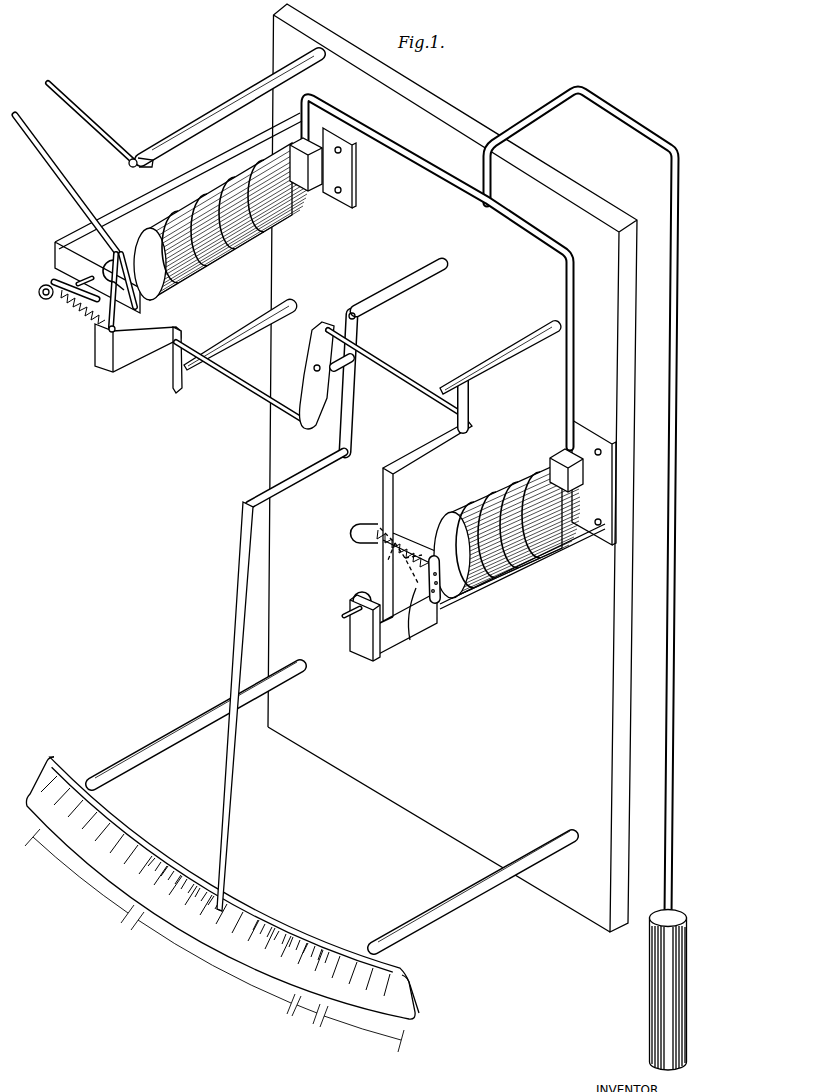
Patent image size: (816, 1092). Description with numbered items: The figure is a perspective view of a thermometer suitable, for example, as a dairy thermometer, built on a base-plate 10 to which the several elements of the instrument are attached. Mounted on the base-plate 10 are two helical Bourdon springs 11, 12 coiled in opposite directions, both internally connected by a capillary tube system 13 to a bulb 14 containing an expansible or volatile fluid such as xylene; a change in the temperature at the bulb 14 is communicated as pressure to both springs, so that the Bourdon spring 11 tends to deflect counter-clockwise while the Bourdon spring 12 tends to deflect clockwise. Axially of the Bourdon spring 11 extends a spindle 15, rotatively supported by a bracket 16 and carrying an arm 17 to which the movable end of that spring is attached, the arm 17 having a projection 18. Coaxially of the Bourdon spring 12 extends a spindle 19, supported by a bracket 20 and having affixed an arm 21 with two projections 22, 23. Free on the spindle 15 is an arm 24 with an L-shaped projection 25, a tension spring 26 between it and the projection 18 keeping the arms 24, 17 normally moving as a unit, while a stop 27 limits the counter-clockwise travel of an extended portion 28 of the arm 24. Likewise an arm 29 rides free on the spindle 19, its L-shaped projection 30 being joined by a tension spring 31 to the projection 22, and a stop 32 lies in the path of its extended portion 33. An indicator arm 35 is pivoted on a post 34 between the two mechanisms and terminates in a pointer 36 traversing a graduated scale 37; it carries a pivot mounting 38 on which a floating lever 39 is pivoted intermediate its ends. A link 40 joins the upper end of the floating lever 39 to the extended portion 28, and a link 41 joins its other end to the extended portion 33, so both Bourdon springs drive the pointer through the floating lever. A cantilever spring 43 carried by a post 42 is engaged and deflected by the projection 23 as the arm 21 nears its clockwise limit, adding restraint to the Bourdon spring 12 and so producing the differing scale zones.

The base-plate 10 is at (624, 217).
The helical Bourdon spring 11 is at (517, 480).
The helical Bourdon spring 12 is at (255, 232).
The capillary tube system 13 is at (461, 177).
The bulb 14 is at (687, 986).
The spindle 15 is at (348, 612).
The bracket 16 is at (528, 560).
The arm 17 is at (410, 640).
The projection 18 is at (357, 524).
The spindle 19 is at (84, 276).
The bracket 20 is at (113, 208).
The arm 21 is at (133, 290).
The projection 22 is at (125, 329).
The projection 23 is at (28, 113).
The arm 24 is at (392, 512).
The L-shaped projection 25 is at (445, 604).
The tension spring 26 is at (378, 552).
The stop 27 is at (508, 358).
The extended portion 28 is at (461, 375).
The arm 29 is at (98, 362).
The L-shaped projection 30 is at (47, 300).
The tension spring 31 is at (76, 310).
The stop 32 is at (219, 340).
The extended portion 33 is at (176, 394).
The post 34 is at (384, 293).
The indicator arm 35 is at (236, 598).
The pointer 36 is at (224, 893).
The graduated scale 37 is at (292, 923).
The pivot mounting 38 is at (348, 372).
The floating lever 39 is at (306, 388).
The link 40 is at (401, 374).
The link 41 is at (249, 394).
The post 42 is at (195, 121).
The cantilever spring 43 is at (118, 139).